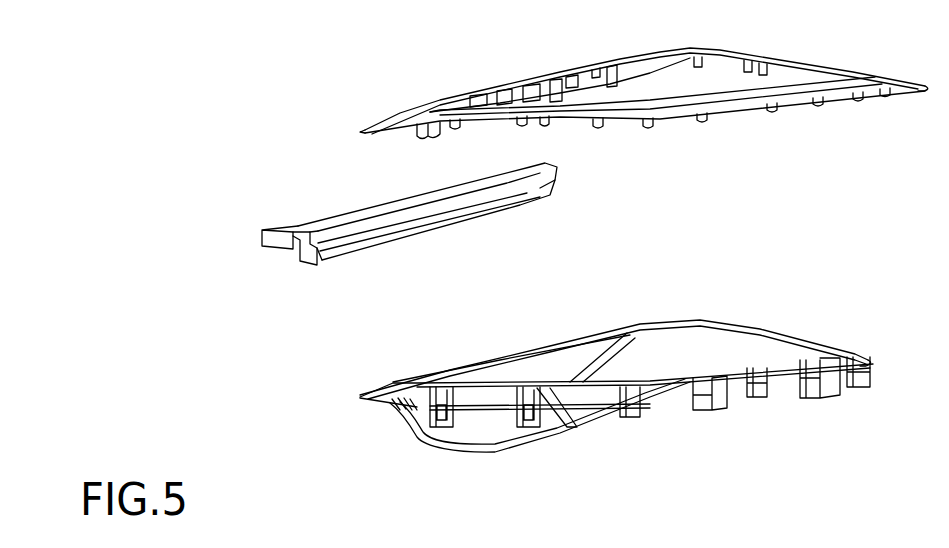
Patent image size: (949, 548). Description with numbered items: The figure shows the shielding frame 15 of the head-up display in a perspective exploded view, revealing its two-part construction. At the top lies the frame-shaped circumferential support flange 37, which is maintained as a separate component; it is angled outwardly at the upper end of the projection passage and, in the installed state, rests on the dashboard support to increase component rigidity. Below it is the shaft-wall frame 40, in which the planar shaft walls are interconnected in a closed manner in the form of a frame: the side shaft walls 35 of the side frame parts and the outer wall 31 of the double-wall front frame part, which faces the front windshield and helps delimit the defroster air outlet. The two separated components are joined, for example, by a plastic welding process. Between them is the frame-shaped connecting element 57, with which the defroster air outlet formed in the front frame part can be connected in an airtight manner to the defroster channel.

The shielding frame 15 is at (172, 142).
The circumferential support flange 37 is at (378, 127).
The connecting element 57 is at (298, 225).
The lower carrier assembly 40 is at (258, 305).
The side shaft walls 35 is at (657, 345).
The outer wall 31 is at (530, 368).